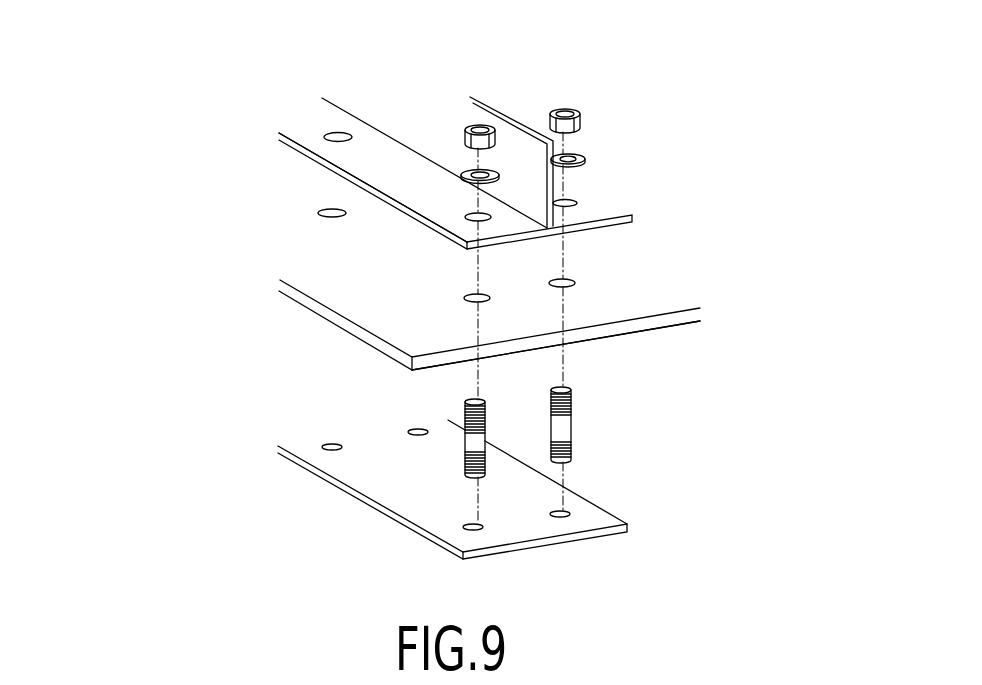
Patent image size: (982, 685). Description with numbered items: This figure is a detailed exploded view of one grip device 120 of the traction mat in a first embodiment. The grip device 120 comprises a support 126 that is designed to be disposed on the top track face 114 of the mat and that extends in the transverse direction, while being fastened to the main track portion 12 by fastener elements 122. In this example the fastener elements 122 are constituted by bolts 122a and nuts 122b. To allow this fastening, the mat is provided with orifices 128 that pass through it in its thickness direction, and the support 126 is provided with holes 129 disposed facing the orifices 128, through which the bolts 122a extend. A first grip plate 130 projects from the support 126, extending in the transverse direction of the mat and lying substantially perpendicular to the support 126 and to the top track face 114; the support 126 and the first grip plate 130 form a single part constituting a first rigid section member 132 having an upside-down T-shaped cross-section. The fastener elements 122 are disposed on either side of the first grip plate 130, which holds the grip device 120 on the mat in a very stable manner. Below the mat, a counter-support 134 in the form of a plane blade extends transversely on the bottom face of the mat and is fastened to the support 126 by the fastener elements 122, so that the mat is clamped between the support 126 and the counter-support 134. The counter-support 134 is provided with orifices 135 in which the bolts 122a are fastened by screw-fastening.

The grip device 120 is at (758, 84).
The first rigid section member 132 is at (300, 85).
The first grip plate 130 is at (513, 132).
The support 126 is at (308, 135).
The orifices 128 is at (320, 215).
The holes 129 is at (466, 216).
The nuts 122b is at (465, 135).
The fastener elements 122 is at (524, 431).
The bolts 122a is at (465, 453).
The top track face 114 is at (660, 310).
The main track portion 12 is at (653, 327).
The counter-support 134 is at (603, 518).
The orifices 135 is at (409, 430).